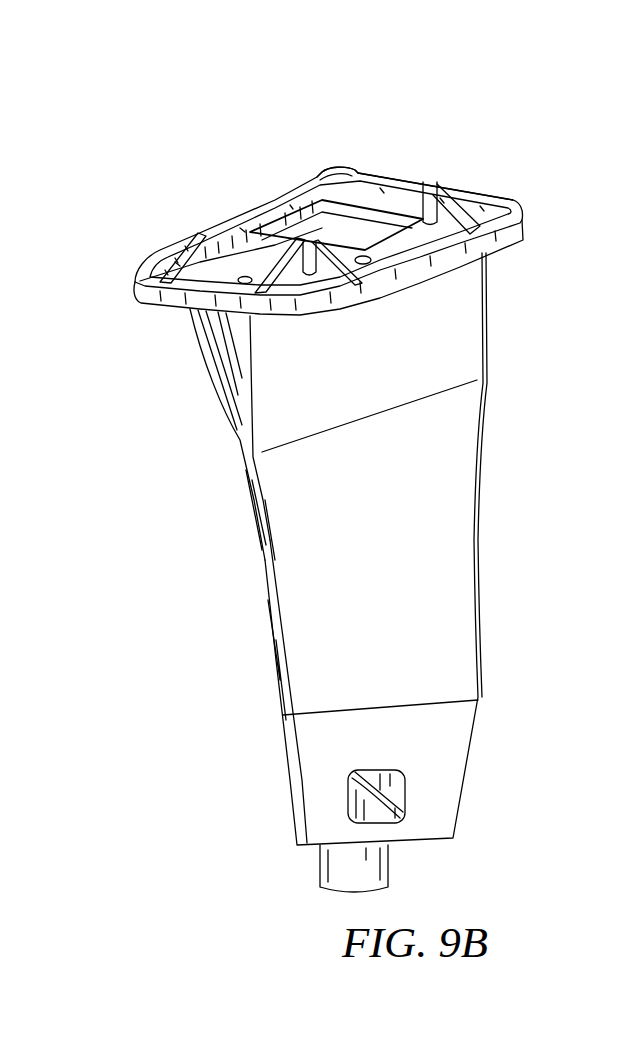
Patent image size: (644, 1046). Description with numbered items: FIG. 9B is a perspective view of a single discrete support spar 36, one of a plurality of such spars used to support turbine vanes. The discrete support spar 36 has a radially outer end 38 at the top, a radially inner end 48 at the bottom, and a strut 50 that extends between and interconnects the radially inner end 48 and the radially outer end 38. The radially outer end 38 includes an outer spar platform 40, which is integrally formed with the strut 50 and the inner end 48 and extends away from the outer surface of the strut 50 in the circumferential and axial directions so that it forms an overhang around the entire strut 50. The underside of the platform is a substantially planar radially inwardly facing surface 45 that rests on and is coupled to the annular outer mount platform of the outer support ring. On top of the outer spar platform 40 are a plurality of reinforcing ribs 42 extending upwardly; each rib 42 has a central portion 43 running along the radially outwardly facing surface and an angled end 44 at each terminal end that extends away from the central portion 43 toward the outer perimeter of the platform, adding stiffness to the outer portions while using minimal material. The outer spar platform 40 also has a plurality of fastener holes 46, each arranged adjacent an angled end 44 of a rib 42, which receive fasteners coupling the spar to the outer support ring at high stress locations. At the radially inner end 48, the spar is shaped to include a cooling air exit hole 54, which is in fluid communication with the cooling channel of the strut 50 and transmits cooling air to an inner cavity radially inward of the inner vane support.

The discrete support spar 36 is at (438, 155).
The radially outer end 38 is at (541, 218).
The outer spar platform 40 is at (507, 198).
The reinforcing rib 42 is at (257, 201).
The central portion 43 is at (289, 185).
The angled end 44 is at (179, 251).
The radially inwardly facing surface 45 is at (178, 321).
The fastener hole 46 is at (238, 280).
The radially inner end 48 is at (329, 904).
The strut 50 is at (449, 555).
The cooling air exit hole 54 is at (392, 797).